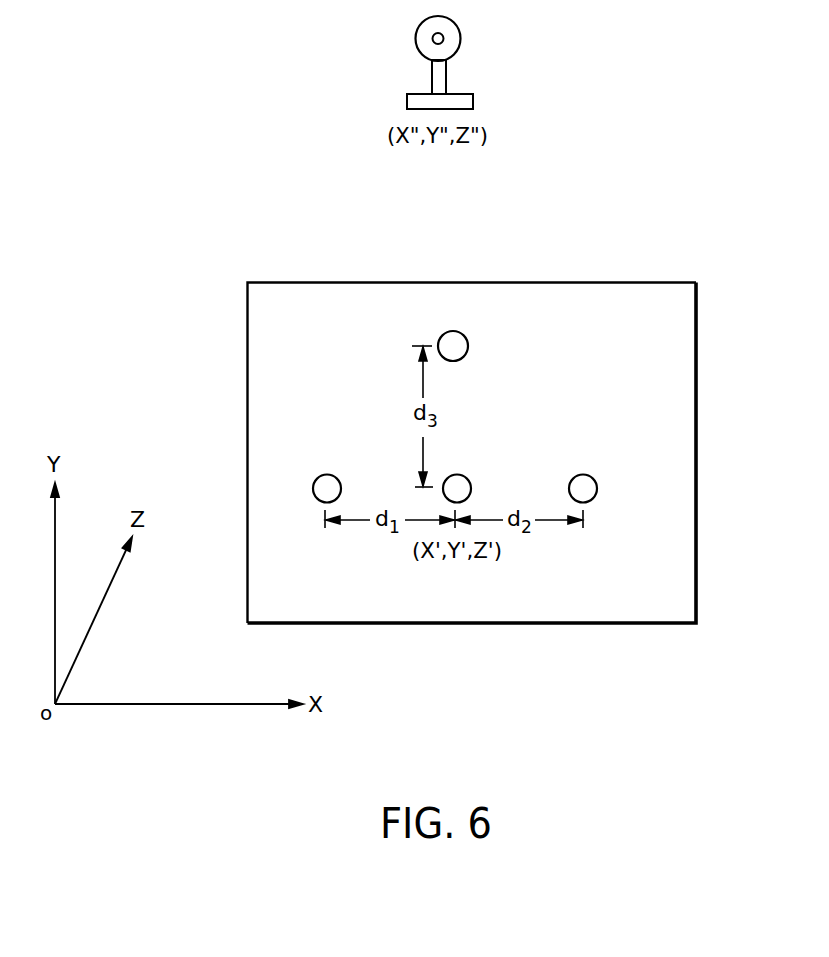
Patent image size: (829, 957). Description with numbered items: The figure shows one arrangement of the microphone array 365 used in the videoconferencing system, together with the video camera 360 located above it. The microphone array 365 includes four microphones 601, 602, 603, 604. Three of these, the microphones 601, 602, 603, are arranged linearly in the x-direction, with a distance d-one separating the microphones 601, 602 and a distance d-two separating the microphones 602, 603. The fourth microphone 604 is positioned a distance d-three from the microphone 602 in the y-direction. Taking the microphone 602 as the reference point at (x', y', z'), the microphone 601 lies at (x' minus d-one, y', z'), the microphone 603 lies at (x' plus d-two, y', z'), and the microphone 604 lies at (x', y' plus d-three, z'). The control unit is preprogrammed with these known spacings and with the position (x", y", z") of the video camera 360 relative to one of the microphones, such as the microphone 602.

The video camera 360 is at (432, 77).
The microphone array 365 is at (698, 574).
The microphone 601 is at (320, 476).
The microphone 602 is at (463, 475).
The microphone 603 is at (590, 475).
The microphone 604 is at (457, 332).